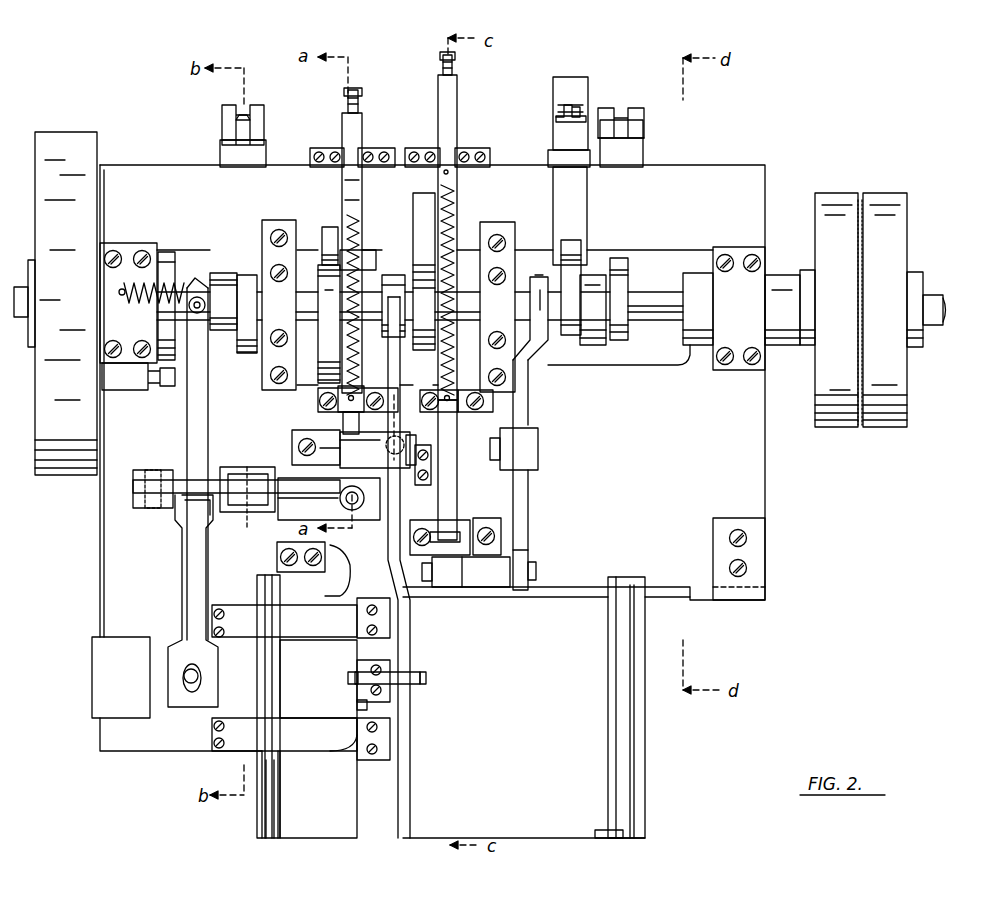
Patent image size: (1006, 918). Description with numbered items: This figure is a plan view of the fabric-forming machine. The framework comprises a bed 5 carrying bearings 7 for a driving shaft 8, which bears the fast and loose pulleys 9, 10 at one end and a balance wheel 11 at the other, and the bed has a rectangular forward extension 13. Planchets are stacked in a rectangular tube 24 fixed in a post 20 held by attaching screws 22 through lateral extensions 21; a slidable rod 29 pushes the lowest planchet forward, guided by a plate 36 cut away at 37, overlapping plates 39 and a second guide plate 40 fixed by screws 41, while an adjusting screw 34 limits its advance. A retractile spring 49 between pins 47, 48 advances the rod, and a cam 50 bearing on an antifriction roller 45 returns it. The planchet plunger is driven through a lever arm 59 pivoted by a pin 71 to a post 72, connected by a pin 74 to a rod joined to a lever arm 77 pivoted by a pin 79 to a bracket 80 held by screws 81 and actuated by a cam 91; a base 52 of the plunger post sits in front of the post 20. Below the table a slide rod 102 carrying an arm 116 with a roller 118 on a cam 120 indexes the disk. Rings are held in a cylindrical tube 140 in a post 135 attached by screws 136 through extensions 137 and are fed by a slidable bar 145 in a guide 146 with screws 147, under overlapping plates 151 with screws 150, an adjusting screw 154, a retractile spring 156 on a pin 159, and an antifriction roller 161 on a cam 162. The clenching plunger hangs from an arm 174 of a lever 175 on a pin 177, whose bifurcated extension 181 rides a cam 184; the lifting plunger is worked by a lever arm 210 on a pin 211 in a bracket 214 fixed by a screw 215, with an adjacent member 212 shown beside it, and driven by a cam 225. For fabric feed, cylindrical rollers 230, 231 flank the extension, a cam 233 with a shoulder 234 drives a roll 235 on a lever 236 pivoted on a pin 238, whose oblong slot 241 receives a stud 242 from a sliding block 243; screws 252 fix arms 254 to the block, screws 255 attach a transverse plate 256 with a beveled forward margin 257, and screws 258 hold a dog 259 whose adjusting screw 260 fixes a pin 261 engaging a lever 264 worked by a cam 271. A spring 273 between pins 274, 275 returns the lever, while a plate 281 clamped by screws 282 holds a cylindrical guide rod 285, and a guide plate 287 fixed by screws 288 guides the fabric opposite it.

The bed 5 is at (740, 474).
The bearings 7 is at (110, 330).
The driving shaft 8 is at (940, 310).
The fast pulley 9 is at (890, 208).
The loose pulley 10 is at (836, 205).
The balance wheel 11 is at (70, 152).
The forward extension 13 is at (595, 810).
The post 20 is at (335, 448).
The lateral extensions 21 is at (300, 445).
The attaching screws 22 is at (400, 380).
The rectangular tube 24 is at (390, 445).
The slidable rod 29 is at (345, 190).
The adjusting screw 34 is at (358, 95).
The plate 36 is at (322, 148).
The cut-away 37 is at (363, 145).
The overlapping plates 39 is at (380, 148).
The second guide plate 40 is at (360, 398).
The screws 41 is at (320, 395).
The antifriction roller 45 is at (325, 240).
The pin 47 is at (340, 415).
The pin 48 is at (352, 212).
The retractile spring 49 is at (375, 265).
The cam 50 is at (332, 314).
The base 52 is at (329, 537).
The lever arm 59 is at (215, 485).
The pin 71 is at (150, 470).
The post 72 is at (143, 505).
The pin 74 is at (245, 511).
The lever arm 77 is at (246, 258).
The pin 79 is at (266, 128).
The bracket 80 is at (238, 152).
The screws 81 is at (238, 135).
The cam 91 is at (240, 348).
The slide rod 102 is at (590, 350).
The inwardly directed arm 116 is at (578, 178).
The roller 118 is at (575, 245).
The cam 120 is at (572, 310).
The post 135 is at (465, 515).
The screws 136 is at (528, 546).
The extensions 137 is at (500, 525).
The cylindrical tube 140 is at (450, 490).
The slidable bar 145 is at (455, 342).
The guide 146 is at (480, 412).
The screws 147 is at (490, 402).
The screws 150 is at (463, 148).
The overlapping plates 151 is at (483, 165).
The adjusting screw 154 is at (452, 62).
The retractile spring 156 is at (450, 240).
The pin 159 is at (448, 170).
The antifriction roller 161 is at (427, 205).
The cam 162 is at (420, 240).
The arm 174 is at (485, 575).
The lever 175 is at (525, 478).
The pin 177 is at (540, 448).
The bifurcated extension 181 is at (530, 290).
The cam 184 is at (548, 330).
The lever arm 210 is at (618, 350).
The pin 211 is at (646, 138).
The block 212 is at (566, 132).
The bracket 214 is at (566, 108).
The screw 215 is at (622, 140).
The cam 225 is at (622, 265).
The cylindrical roller 230 is at (632, 760).
The cylindrical roller 231 is at (268, 820).
The cam 233 is at (166, 250).
The shoulder 234 is at (185, 300).
The roll 235 is at (205, 290).
The lever 236 is at (200, 396).
The pin 238 is at (195, 505).
The oblong slot 241 is at (185, 690).
The stud 242 is at (188, 674).
The block 243 is at (96, 682).
The screws 252 is at (224, 614).
The arms 254 is at (310, 625).
The screws 255 is at (377, 630).
The transverse plate 256 is at (395, 785).
The beveled forward margin 257 is at (412, 822).
The screws 258 is at (385, 666).
The dog 259 is at (365, 668).
The adjusting screw 260 is at (358, 705).
The pin 261 is at (348, 681).
The lever 264 is at (412, 500).
The cam 271 is at (394, 275).
The spring 273 is at (130, 280).
The pin 274 is at (197, 292).
The pin 275 is at (120, 292).
The plate 281 is at (750, 530).
The screws 282 is at (750, 570).
The cylindrical guide rod 285 is at (592, 585).
The guide plate 287 is at (330, 580).
The screws 288 is at (277, 560).